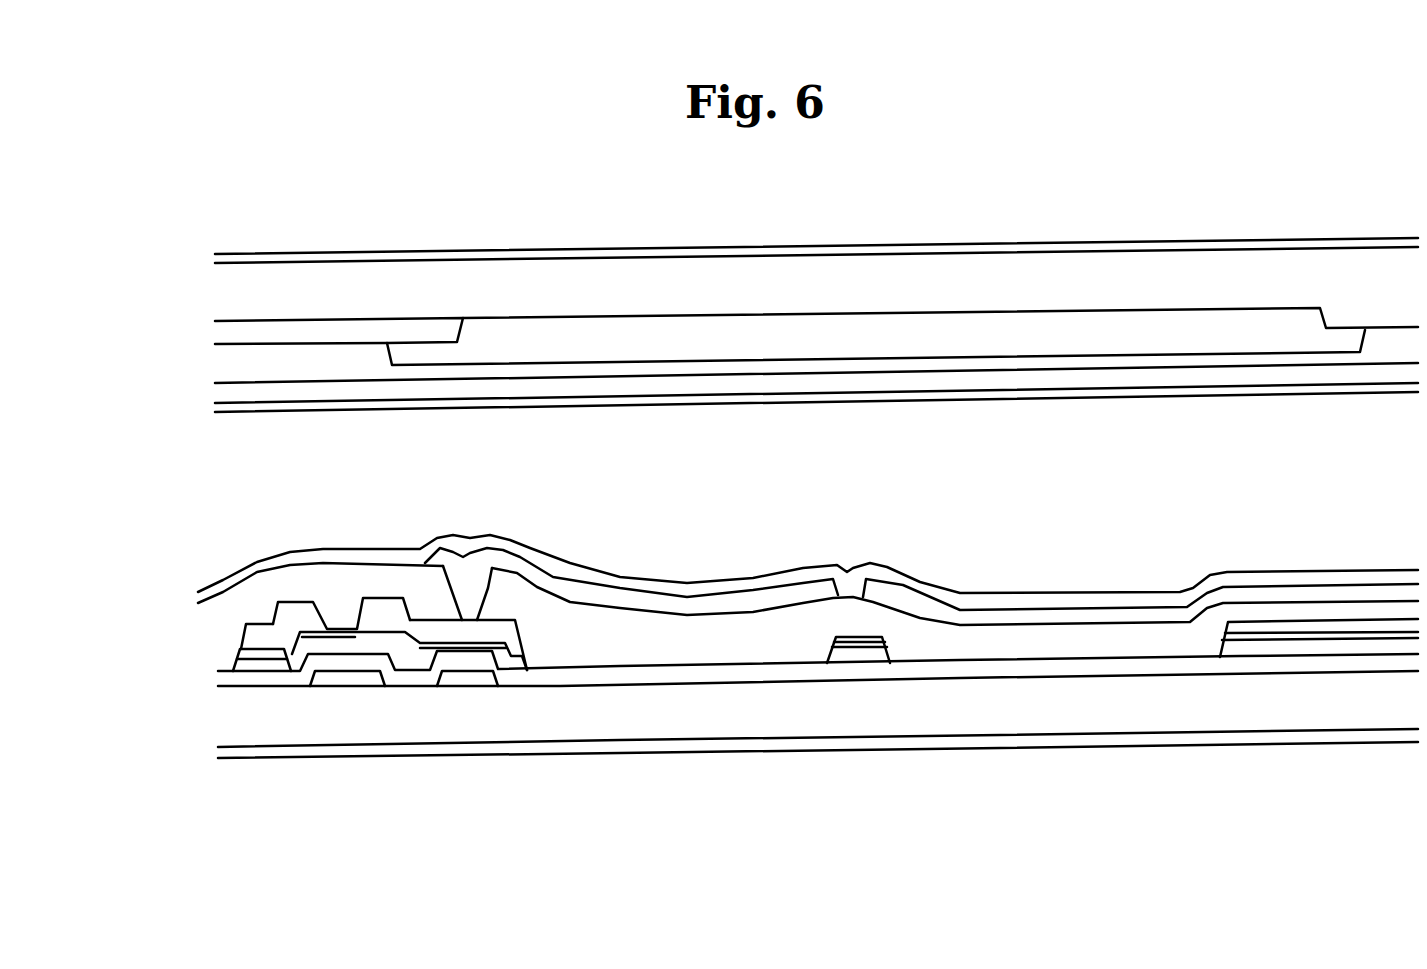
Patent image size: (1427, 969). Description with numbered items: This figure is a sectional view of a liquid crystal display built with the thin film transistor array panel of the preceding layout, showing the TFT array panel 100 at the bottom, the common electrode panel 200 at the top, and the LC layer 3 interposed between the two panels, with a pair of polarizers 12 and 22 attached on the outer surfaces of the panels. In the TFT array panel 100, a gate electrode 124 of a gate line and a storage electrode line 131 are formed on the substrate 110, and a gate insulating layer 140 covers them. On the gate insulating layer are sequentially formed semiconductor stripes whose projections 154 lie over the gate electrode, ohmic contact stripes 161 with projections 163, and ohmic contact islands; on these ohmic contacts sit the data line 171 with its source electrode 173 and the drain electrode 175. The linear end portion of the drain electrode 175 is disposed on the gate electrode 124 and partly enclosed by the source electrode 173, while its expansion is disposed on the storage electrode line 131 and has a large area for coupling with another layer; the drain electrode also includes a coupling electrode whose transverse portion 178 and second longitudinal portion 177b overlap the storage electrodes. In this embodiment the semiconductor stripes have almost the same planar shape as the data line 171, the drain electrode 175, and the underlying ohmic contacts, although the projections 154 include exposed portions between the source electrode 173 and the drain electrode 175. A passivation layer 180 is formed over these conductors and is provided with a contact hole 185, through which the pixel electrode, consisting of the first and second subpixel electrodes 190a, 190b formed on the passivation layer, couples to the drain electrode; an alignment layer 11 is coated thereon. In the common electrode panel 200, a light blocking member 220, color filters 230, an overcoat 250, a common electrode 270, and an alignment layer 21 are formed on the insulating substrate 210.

The LC layer 3 is at (200, 486).
The common electrode panel 200 is at (182, 308).
The TFT array panel 100 is at (182, 684).
The polarizer 22 is at (936, 247).
The alignment layer 21 is at (1126, 392).
The insulating substrate 210 is at (781, 270).
The light blocking member 220 is at (418, 325).
The color filter 230 is at (607, 322).
The overcoat 250 is at (532, 372).
The common electrode 270 is at (678, 385).
The substrate 110 is at (715, 728).
The polarizer 12 is at (1146, 740).
The alignment layer 11 is at (1087, 600).
The gate electrode 124 is at (338, 680).
The storage electrode line 131 is at (453, 677).
The gate insulating layer 140 is at (773, 670).
The projection 154 is at (353, 630).
The ohmic contact stripe 161 is at (255, 650).
The projection 163 is at (300, 624).
The data line 171 is at (272, 637).
The source electrode 173 is at (311, 624).
The drain electrode 175 is at (482, 635).
The second longitudinal portion 177b is at (1387, 628).
The transverse portion 178 is at (867, 638).
The passivation layer 180 is at (663, 652).
The contact hole 185 is at (490, 594).
The first subpixel electrode 190a is at (617, 603).
The second subpixel electrode 190b is at (1000, 612).